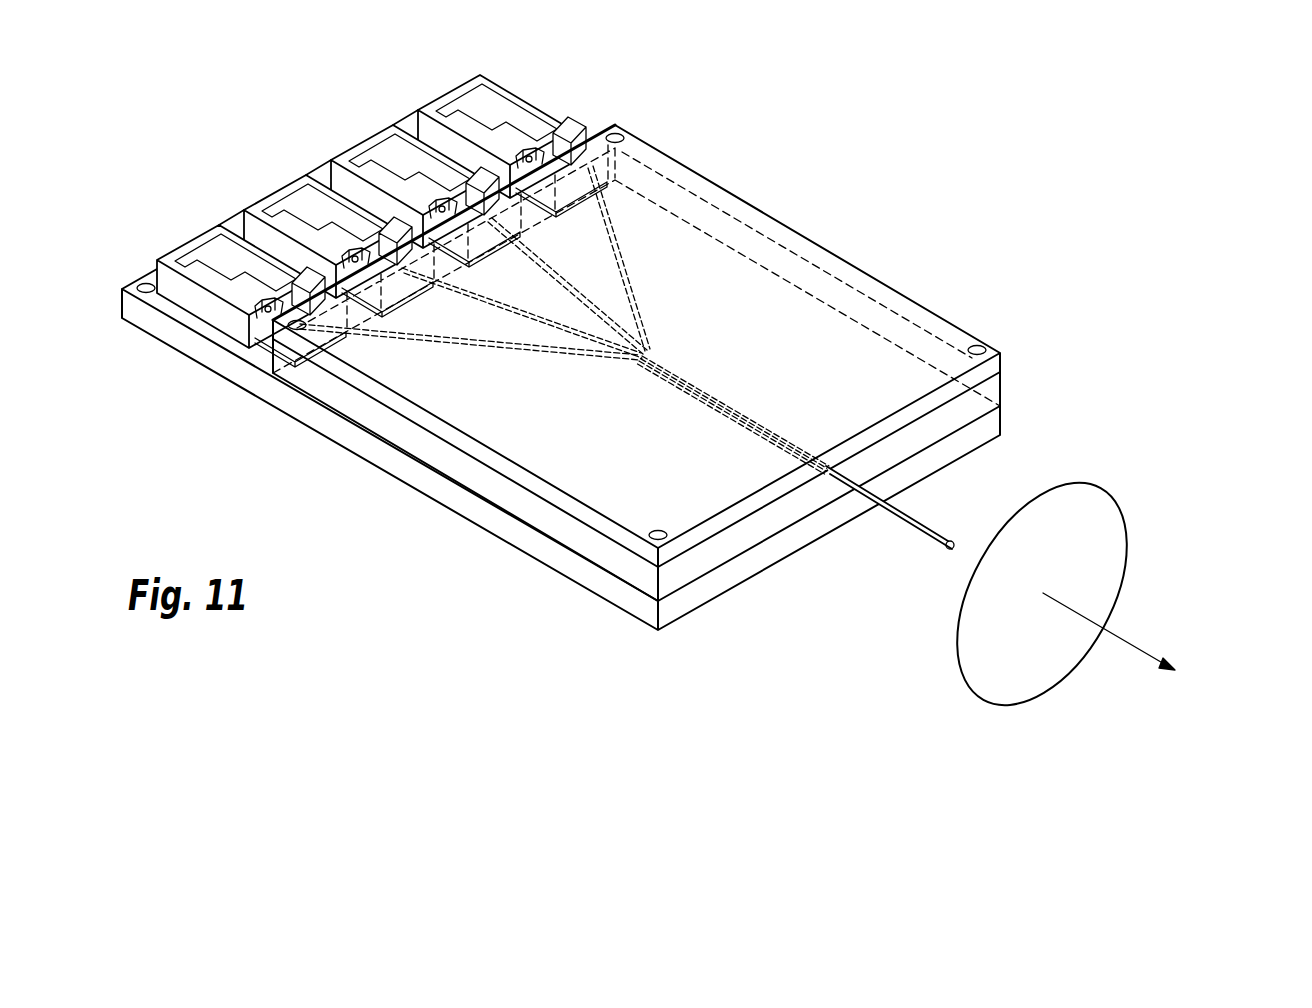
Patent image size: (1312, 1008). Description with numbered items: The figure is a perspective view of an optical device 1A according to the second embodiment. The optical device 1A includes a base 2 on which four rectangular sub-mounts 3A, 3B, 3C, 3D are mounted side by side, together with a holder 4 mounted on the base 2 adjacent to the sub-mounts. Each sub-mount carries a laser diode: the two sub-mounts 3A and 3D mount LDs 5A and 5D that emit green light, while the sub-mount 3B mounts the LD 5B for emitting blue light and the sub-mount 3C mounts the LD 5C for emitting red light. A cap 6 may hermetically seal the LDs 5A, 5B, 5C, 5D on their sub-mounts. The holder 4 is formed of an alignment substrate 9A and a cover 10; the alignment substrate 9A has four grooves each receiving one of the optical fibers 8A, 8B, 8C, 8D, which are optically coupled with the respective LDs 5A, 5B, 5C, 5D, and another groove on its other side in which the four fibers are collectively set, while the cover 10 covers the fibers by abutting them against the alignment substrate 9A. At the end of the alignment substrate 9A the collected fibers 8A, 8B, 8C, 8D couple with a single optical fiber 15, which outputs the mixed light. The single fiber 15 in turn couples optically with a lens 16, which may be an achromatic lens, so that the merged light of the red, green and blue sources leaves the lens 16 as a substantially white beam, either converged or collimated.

The optical device 1A is at (912, 108).
The base 2 is at (378, 455).
The sub-mount 3A is at (181, 245).
The sub-mount 3B is at (268, 196).
The sub-mount 3C is at (351, 148).
The sub-mount 3D is at (437, 100).
The holder 4 is at (852, 262).
The LD 5A is at (268, 314).
The LD 5B is at (378, 268).
The LD 5C is at (463, 205).
The LD 5D is at (547, 158).
The cap 6 is at (247, 298).
The optical fiber 8A is at (488, 357).
The optical fiber 8B is at (528, 322).
The optical fiber 8C is at (588, 308).
The optical fiber 8D is at (624, 297).
The alignment substrate 9A is at (510, 498).
The cover 10 is at (772, 228).
The single optical fiber 15 is at (915, 528).
The lens 16 is at (1078, 482).